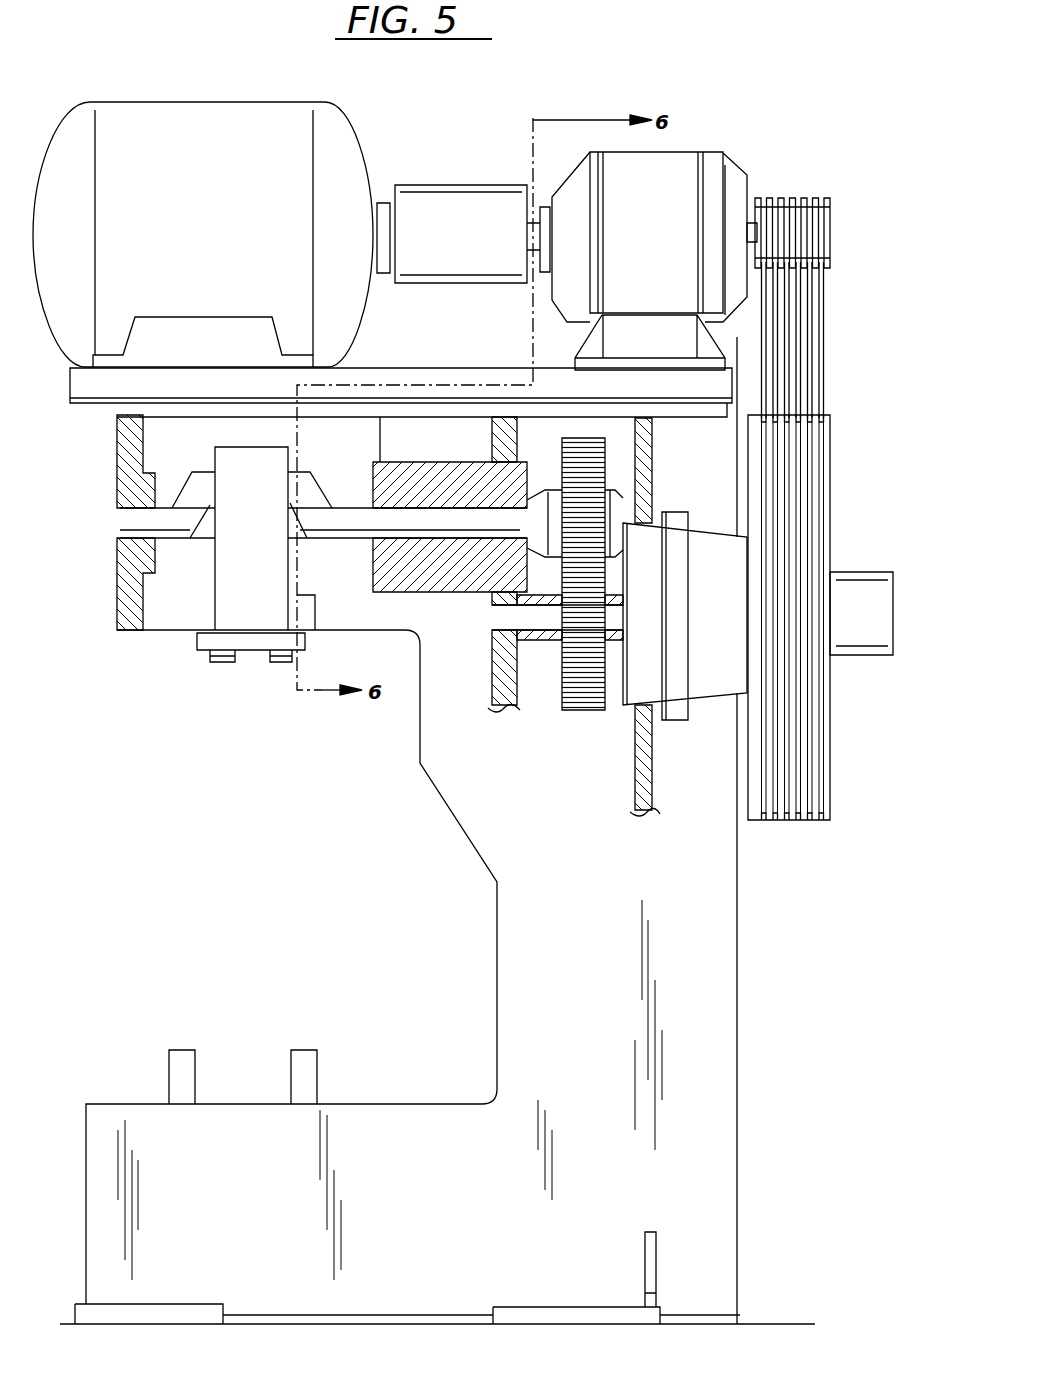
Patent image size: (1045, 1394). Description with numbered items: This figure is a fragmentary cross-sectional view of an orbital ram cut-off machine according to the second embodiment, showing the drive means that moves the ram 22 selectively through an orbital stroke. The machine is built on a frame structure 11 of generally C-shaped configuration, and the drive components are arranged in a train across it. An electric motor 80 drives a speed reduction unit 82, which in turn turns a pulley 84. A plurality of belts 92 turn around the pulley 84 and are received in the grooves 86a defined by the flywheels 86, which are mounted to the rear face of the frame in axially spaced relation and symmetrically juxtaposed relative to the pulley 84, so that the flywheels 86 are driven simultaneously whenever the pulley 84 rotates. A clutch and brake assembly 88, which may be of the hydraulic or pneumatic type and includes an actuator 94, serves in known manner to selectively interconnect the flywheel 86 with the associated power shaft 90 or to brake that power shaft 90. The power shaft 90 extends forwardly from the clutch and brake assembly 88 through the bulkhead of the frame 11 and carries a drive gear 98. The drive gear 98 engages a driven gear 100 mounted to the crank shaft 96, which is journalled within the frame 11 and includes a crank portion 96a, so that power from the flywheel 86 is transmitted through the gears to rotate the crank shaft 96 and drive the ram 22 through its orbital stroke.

The frame structure 11 is at (703, 1025).
The ram 22 is at (250, 632).
The electric motor 80 is at (218, 225).
The speed reduction unit 82 is at (663, 237).
The pulley 84 is at (832, 215).
The flywheel 86 is at (832, 807).
The grooves 86a is at (815, 458).
The clutch and brake assembly 88 is at (676, 708).
The power shaft 90 is at (537, 620).
The belts 92 is at (820, 340).
The actuator 94 is at (862, 592).
The crank shaft 96 is at (342, 522).
The crank portion 96a is at (195, 492).
The drive gear 98 is at (587, 708).
The driven gear 100 is at (600, 462).